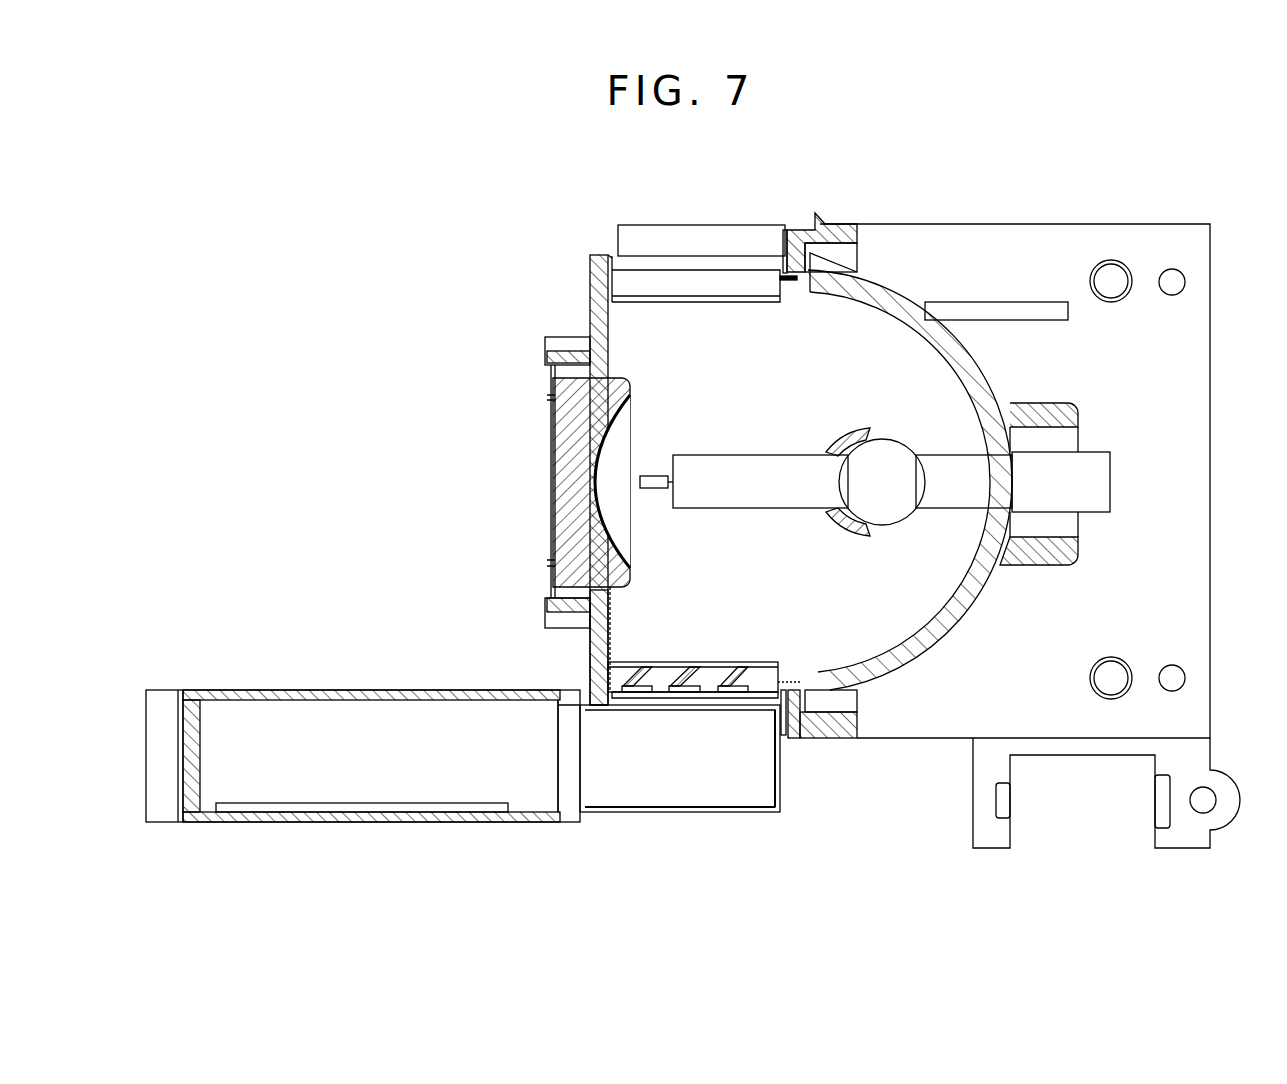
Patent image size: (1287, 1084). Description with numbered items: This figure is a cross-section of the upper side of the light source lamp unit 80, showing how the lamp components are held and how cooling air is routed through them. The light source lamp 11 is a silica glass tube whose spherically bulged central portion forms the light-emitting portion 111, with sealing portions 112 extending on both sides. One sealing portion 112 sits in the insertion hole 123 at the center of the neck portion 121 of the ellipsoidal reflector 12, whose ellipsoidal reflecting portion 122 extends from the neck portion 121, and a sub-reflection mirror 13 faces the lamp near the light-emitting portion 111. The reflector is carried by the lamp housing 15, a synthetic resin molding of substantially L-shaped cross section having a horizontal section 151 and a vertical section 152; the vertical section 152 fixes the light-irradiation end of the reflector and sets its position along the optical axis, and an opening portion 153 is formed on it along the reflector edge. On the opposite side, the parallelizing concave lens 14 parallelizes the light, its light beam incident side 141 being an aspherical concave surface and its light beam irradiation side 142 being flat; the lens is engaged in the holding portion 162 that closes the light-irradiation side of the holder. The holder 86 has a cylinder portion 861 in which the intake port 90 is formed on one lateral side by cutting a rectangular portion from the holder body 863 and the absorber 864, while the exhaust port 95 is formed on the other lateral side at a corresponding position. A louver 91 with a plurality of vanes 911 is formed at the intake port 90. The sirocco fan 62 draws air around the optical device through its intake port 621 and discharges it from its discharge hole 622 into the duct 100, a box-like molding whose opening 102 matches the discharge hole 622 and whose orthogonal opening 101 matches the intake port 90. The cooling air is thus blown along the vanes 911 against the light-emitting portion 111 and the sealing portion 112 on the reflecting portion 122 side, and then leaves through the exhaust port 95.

The light source lamp unit 80 is at (490, 228).
The holder 86 is at (596, 254).
The cylinder portion 861 is at (612, 256).
The exhaust port 95 is at (640, 268).
The horizontal section 151 is at (1062, 240).
The holding portion 162 is at (588, 338).
The reflecting portion 122 is at (985, 365).
The light beam incident side 141 is at (618, 432).
The light source lamp 11 is at (808, 454).
The sub-reflection mirror 13 is at (858, 430).
The sealing portion 112 is at (740, 470).
The lamp housing 15 is at (1212, 478).
The parallelizing concave lens 14 is at (560, 456).
The light beam irradiation side 142 is at (553, 515).
The light-emitting portion 111 is at (888, 522).
The insertion hole 123 is at (985, 570).
The neck portion 121 is at (1070, 555).
The absorber 864 is at (612, 632).
The vanes 911 is at (738, 664).
The louver 91 is at (765, 662).
The sirocco fan 62 is at (292, 690).
The holder body 863 is at (590, 652).
The ellipsoidal reflector 12 is at (915, 664).
The discharge hole 622 is at (567, 758).
The intake port 90 is at (632, 700).
The opening 101 is at (770, 710).
The opening portion 153 is at (822, 740).
The vertical section 152 is at (845, 740).
The intake port 621 is at (386, 813).
The opening 102 is at (597, 814).
The duct 100 is at (668, 814).